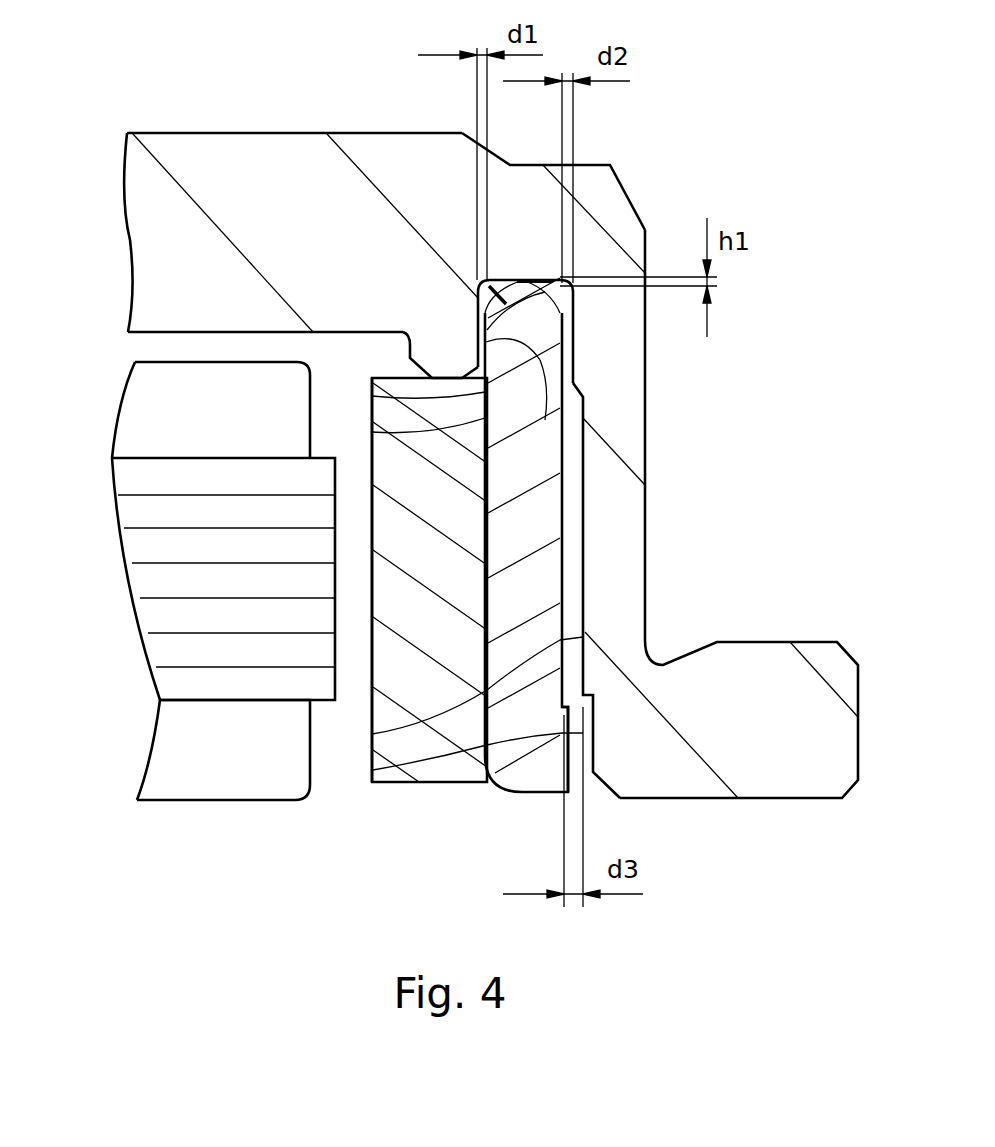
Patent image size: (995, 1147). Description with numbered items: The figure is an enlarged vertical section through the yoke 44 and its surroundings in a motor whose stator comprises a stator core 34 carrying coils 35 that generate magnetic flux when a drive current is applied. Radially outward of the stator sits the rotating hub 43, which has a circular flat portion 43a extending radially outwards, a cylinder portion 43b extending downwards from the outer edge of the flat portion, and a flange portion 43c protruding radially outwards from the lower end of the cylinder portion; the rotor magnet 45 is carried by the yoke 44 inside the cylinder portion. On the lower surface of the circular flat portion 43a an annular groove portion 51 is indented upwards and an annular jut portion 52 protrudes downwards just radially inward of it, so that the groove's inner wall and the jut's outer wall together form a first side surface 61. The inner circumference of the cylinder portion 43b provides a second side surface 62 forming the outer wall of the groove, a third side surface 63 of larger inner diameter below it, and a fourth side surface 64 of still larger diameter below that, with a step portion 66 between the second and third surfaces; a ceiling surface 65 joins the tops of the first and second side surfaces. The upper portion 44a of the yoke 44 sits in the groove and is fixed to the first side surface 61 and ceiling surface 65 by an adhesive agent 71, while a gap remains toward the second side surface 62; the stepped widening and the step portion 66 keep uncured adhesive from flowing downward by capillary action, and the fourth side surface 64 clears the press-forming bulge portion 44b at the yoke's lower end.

The stator core 34 is at (150, 582).
The coils 35 is at (170, 757).
The hub 43 is at (636, 190).
The circular flat portion 43a is at (288, 150).
The cylinder portion 43b is at (630, 527).
The flange portion 43c is at (766, 662).
The yoke 44 is at (499, 792).
The upper portion 44a is at (372, 396).
The bulge portion 44b is at (562, 753).
The rotor magnet 45 is at (431, 783).
The annular groove portion 51 is at (543, 331).
The annular jut portion 52 is at (445, 350).
The first side surface 61 is at (529, 278).
The second side surface 62 is at (372, 432).
The third side surface 63 is at (372, 734).
The fourth side surface 64 is at (373, 770).
The ceiling surface 65 is at (573, 300).
The step portion 66 is at (583, 418).
The adhesive agent 71 is at (500, 282).